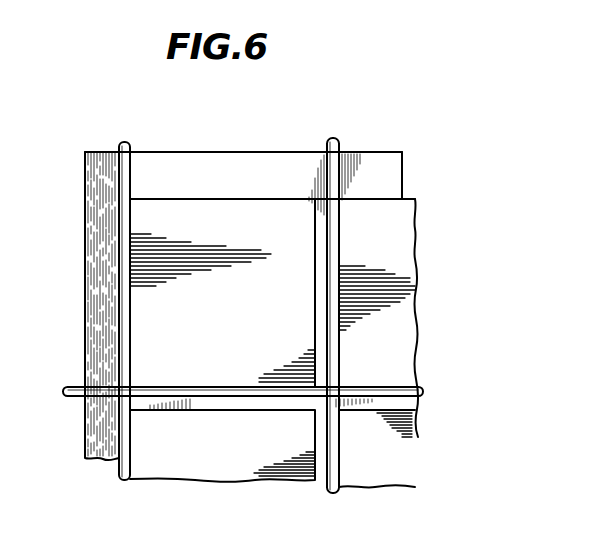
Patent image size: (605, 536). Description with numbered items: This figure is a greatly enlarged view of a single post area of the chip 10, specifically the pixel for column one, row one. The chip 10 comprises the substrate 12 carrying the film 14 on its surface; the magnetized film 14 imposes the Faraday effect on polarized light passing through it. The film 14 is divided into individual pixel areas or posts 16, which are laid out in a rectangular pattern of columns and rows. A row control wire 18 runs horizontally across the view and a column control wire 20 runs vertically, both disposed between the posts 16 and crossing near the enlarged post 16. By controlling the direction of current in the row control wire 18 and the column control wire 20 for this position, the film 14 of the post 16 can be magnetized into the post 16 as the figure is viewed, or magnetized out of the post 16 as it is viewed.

The chip 10 is at (78, 457).
The substrate 12 is at (106, 194).
The film 14 is at (244, 198).
The post 16 is at (230, 297).
The row control wire 18 is at (76, 397).
The column control wire 20 is at (130, 144).